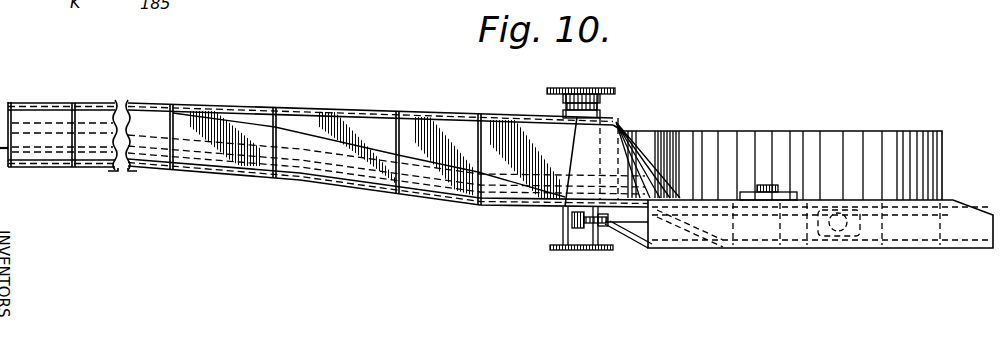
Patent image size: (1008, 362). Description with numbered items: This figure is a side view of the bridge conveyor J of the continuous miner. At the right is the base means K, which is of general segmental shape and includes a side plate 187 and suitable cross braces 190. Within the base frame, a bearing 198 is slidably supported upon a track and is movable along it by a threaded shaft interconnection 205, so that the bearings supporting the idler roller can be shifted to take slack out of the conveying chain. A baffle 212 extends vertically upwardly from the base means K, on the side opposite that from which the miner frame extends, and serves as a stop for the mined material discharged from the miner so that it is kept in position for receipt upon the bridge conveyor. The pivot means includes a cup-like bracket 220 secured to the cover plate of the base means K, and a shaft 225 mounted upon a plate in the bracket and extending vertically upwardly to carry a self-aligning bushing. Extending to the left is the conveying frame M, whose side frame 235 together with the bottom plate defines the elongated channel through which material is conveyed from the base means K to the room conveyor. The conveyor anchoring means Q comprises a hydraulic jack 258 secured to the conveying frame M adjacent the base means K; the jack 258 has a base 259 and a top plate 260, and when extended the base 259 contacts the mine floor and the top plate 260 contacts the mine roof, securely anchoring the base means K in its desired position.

The side frame 235 is at (283, 87).
The top plate 260 is at (587, 87).
The threaded shaft interconnection 205 is at (572, 219).
The hydraulic jack 258 is at (570, 233).
The base 259 is at (583, 250).
The shaft 225 is at (767, 184).
The cup-like bracket 220 is at (786, 196).
The baffle 212 is at (916, 119).
The side plate 187 is at (768, 235).
The bearing 198 is at (848, 250).
The cross brace 190 is at (937, 241).
The bridge conveyor J is at (423, 74).
The conveying frame M is at (337, 192).
The conveyor anchoring means Q is at (626, 77).
The base means K is at (960, 257).